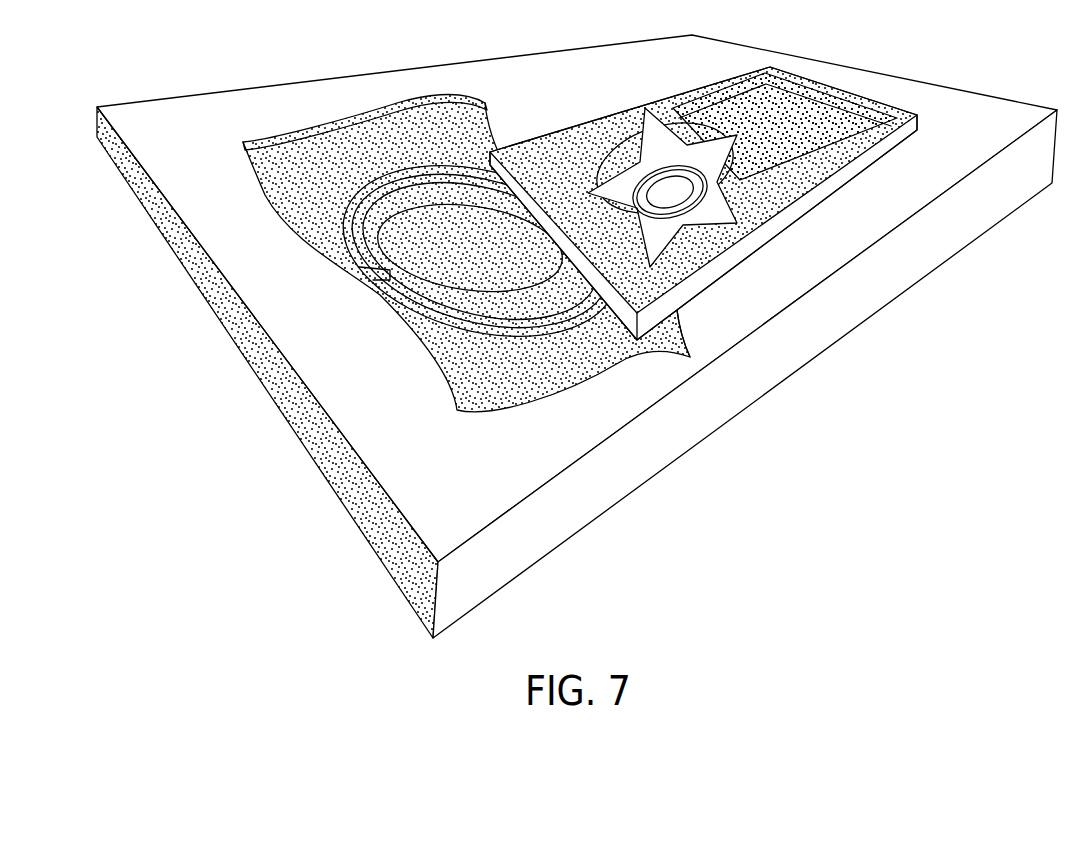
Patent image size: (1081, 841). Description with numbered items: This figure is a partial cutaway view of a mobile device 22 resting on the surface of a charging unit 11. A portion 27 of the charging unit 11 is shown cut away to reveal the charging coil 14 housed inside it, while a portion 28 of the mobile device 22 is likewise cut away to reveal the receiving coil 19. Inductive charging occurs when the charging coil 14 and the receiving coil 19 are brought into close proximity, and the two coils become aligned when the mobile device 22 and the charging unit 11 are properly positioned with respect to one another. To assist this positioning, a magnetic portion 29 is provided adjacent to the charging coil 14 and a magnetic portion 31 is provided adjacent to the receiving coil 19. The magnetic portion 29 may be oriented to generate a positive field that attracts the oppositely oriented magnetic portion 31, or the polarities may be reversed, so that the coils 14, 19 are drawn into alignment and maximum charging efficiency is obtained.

The charging unit 11 is at (930, 258).
The portion of charging unit 27 is at (462, 118).
The charging coil 14 is at (372, 168).
The magnetic portion 29 is at (443, 268).
The receiving coil 19 is at (694, 230).
The mobile device 22 is at (897, 115).
The portion of mobile device 28 is at (652, 131).
The magnetic portion 31 is at (683, 193).